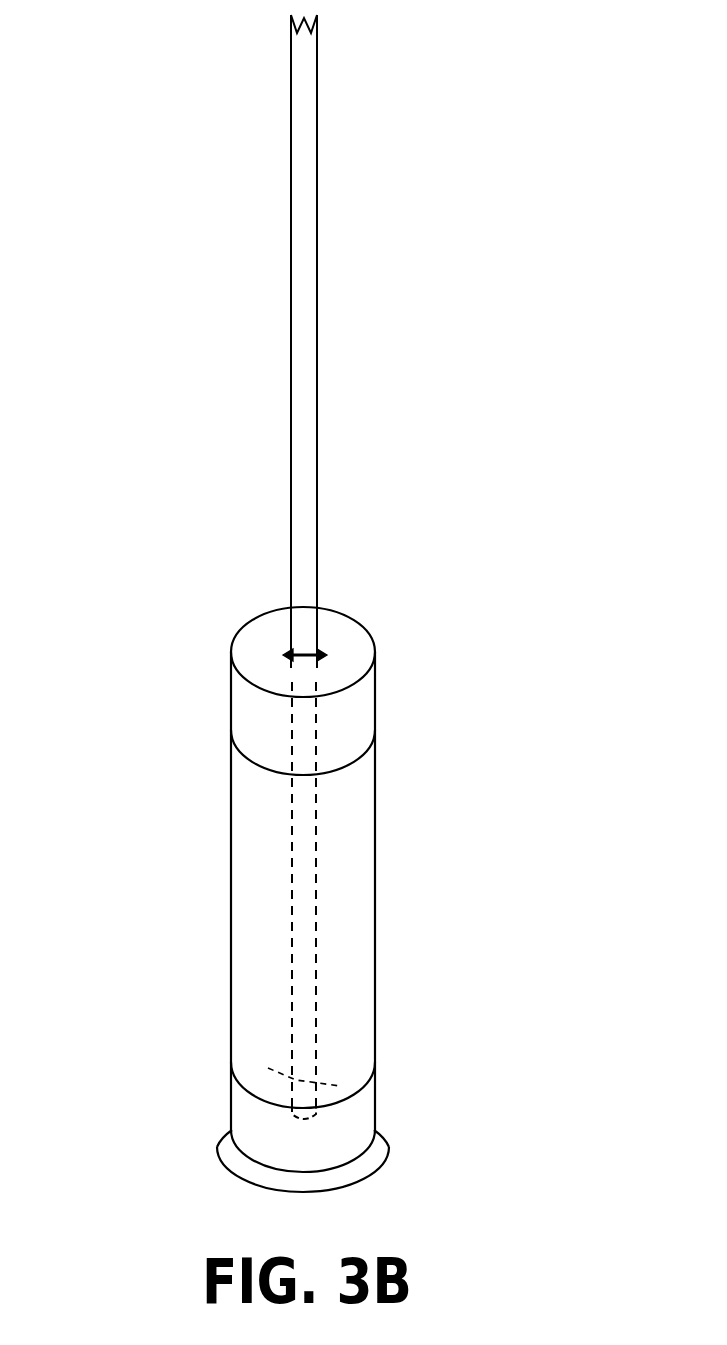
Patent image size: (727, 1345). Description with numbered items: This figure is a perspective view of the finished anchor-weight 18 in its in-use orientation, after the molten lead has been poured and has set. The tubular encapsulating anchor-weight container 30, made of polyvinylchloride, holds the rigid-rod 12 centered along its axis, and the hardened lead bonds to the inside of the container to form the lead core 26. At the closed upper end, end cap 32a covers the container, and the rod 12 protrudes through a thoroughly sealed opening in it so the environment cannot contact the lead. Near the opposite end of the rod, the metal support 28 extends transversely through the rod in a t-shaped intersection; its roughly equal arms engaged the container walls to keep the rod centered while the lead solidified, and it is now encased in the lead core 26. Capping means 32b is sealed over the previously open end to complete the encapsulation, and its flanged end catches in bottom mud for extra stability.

The rigid-rod 12 is at (322, 324).
The anchor-weight 18 is at (385, 867).
The lead core 26 is at (268, 936).
The metal support 28 is at (268, 1068).
The tubular encapsulating anchor-weight container 30 is at (230, 868).
The end cap 32a is at (377, 692).
The capping means 32b is at (378, 1105).